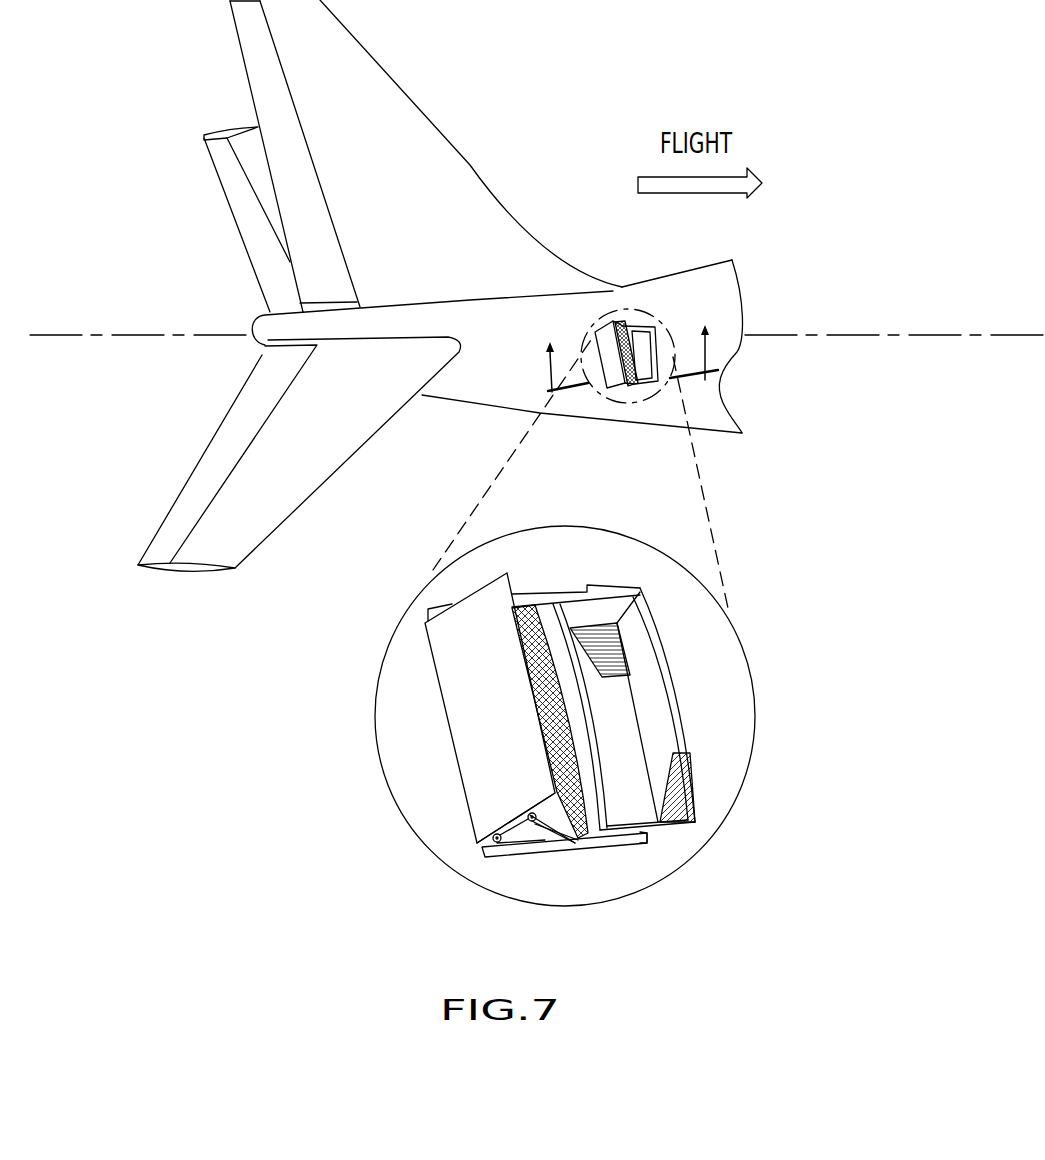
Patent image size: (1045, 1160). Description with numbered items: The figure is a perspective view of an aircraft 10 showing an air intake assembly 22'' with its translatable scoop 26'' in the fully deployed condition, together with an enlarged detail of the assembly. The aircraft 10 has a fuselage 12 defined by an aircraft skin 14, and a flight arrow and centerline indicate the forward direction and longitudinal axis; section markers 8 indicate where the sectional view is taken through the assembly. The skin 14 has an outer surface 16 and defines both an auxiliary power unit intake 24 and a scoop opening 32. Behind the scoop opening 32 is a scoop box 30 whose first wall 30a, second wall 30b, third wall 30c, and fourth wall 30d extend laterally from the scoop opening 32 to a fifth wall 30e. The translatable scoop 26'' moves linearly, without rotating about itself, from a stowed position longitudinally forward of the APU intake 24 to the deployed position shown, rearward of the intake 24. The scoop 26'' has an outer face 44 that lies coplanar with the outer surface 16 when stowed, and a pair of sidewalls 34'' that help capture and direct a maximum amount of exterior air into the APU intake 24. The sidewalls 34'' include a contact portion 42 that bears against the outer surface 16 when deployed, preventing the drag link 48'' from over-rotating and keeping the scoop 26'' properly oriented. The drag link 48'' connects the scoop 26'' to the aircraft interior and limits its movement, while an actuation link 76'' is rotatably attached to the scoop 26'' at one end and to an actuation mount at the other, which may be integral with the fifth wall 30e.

The section line 8- 8 is at (622, 347).
The aircraft 10 is at (480, 285).
The fuselage 12 is at (622, 317).
The aircraft skin 14 is at (725, 283).
The outer surface 16 is at (727, 682).
The air intake assembly 22'' is at (617, 867).
The auxiliary power unit (APU) intake 24 is at (533, 617).
The translatable scoop 26'' is at (434, 818).
The scoop box 30 is at (667, 688).
The first wall 30a is at (662, 722).
The second wall 30b is at (608, 700).
The third wall 30c is at (650, 830).
The fourth wall 30d is at (605, 610).
The fifth wall 30e is at (609, 644).
The scoop opening 32 is at (710, 835).
The sidewalls 34'' is at (475, 705).
The contact portion 42 is at (464, 852).
The outer face 44 is at (460, 643).
The drag link 48'' is at (470, 862).
The actuation link 76'' is at (589, 859).